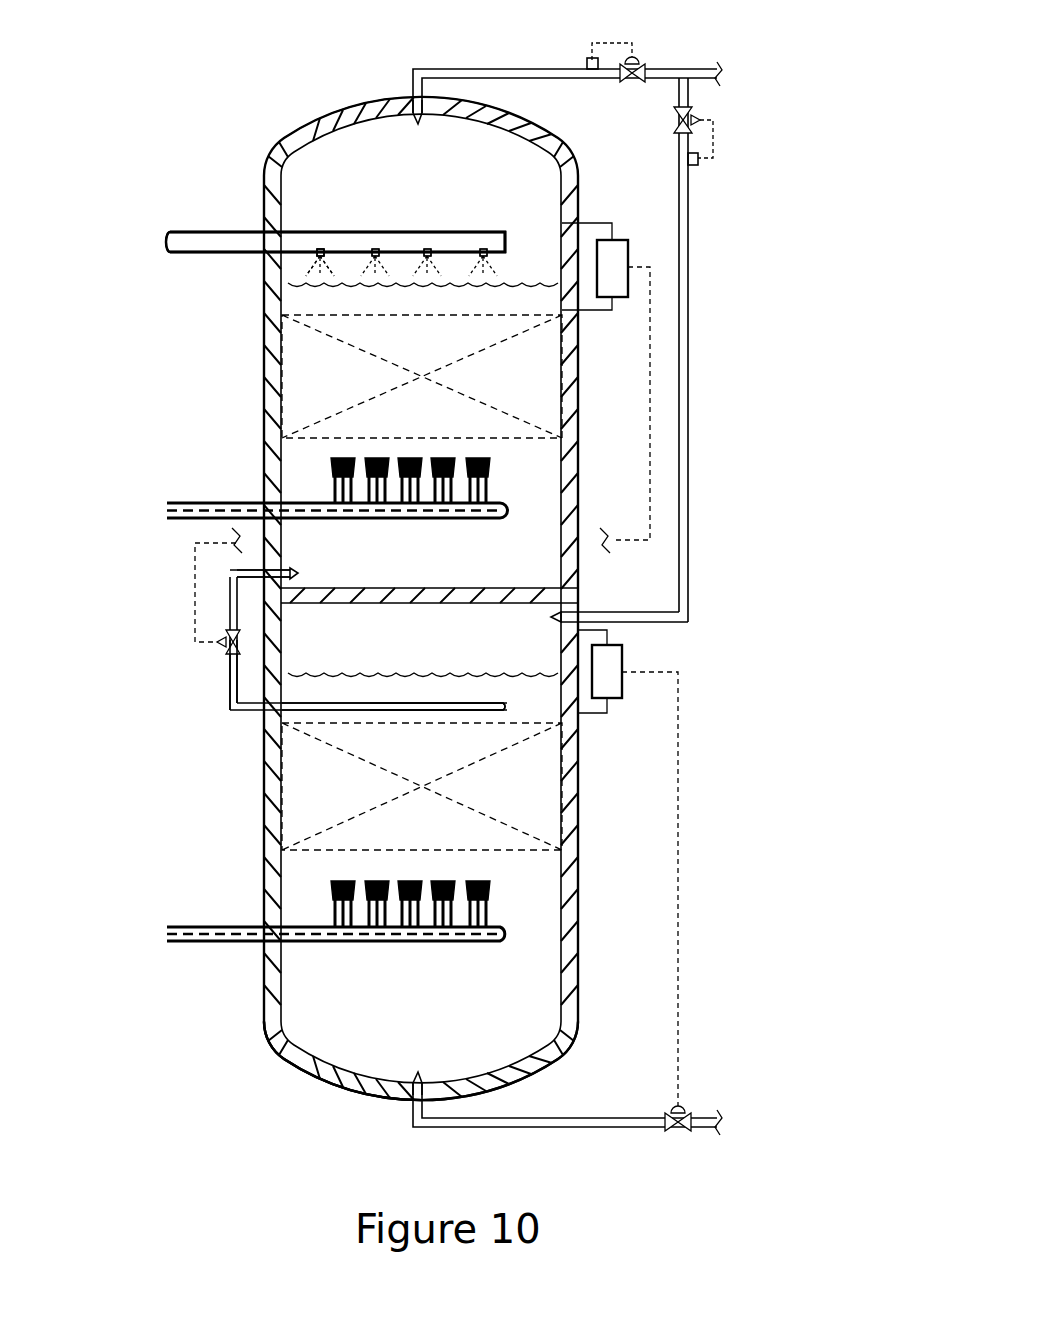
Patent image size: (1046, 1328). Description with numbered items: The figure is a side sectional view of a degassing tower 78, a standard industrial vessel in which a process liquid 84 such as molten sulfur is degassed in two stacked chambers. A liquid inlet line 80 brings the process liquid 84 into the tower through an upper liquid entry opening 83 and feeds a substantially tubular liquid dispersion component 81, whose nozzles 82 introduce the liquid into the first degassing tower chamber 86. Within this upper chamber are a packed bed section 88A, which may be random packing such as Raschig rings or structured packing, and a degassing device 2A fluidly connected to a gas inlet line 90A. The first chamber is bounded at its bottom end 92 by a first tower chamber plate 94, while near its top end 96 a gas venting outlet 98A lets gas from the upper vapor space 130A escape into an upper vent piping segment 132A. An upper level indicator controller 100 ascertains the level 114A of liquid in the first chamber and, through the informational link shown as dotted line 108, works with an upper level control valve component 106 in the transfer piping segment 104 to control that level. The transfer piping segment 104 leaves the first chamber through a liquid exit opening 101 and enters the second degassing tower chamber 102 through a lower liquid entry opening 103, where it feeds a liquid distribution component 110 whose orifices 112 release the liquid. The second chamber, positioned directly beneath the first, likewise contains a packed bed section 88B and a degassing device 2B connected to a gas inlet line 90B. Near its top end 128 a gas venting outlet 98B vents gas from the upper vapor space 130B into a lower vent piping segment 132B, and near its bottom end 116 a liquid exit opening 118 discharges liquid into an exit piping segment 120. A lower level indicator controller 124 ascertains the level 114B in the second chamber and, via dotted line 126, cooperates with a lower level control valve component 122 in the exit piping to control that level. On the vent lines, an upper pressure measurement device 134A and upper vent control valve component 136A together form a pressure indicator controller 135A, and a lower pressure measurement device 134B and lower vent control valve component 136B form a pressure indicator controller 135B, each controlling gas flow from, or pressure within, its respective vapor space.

The degassing tower 78 is at (265, 81).
The liquid inlet line 80 is at (207, 245).
The liquid dispersion component 81 is at (343, 247).
The nozzles 82 is at (320, 247).
The upper liquid entry opening 83 is at (272, 257).
The process liquid 84 is at (300, 264).
The first degassing tower chamber 86 is at (347, 240).
The packed bed section 88A is at (298, 378).
The packed bed section 88B is at (297, 808).
The gas inlet line 90A is at (222, 505).
The gas inlet line 90B is at (222, 929).
The degassing device 2A is at (300, 502).
The degassing device 2B is at (300, 930).
The bottom end 92 is at (525, 596).
The first tower chamber plate 94 is at (580, 590).
The top end 96 is at (308, 139).
The gas venting outlet 98A is at (416, 118).
The gas venting outlet 98B is at (566, 620).
The upper level indicator controller 100 is at (628, 248).
The liquid exit opening 101 is at (275, 578).
The second degassing tower chamber 102 is at (282, 972).
The lower liquid entry opening 103 is at (268, 682).
The transfer piping segment 104 is at (232, 680).
The upper level control valve component 106 is at (222, 643).
The dotted line 108 is at (650, 342).
The liquid distribution component 110 is at (310, 710).
The orifices 112 is at (382, 707).
The level 114A is at (290, 283).
The level 114B is at (290, 674).
The bottom end 116 is at (300, 1055).
The liquid exit opening 118 is at (418, 1078).
The exit piping segment 120 is at (555, 1122).
The lower level control valve component 122 is at (682, 1112).
The lower level indicator controller 124 is at (622, 660).
The dotted line 126 is at (680, 745).
The top end 128 is at (692, 616).
The upper vapor space 130A is at (441, 189).
The upper vapor space 130B is at (438, 646).
The upper vent piping segment 132A is at (466, 70).
The lower vent piping segment 132B is at (688, 452).
The upper pressure measurement device 134A is at (590, 58).
The lower pressure measurement device 134B is at (698, 160).
The pressure indicator controller 135A is at (618, 44).
The pressure indicator controller 135B is at (713, 136).
The upper vent control valve component 136A is at (640, 68).
The lower vent control valve component 136B is at (694, 118).